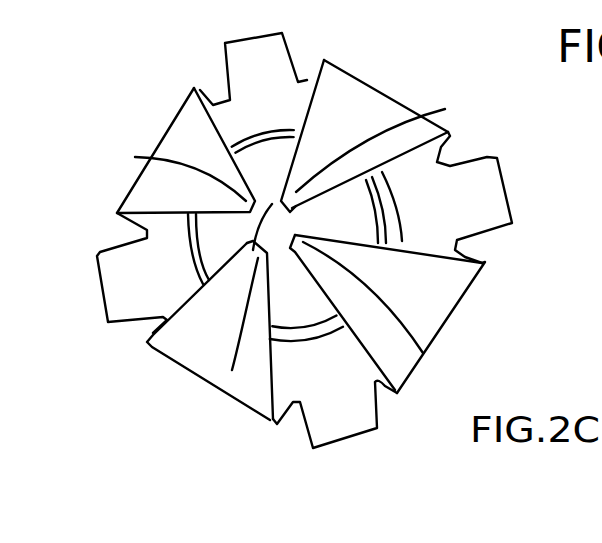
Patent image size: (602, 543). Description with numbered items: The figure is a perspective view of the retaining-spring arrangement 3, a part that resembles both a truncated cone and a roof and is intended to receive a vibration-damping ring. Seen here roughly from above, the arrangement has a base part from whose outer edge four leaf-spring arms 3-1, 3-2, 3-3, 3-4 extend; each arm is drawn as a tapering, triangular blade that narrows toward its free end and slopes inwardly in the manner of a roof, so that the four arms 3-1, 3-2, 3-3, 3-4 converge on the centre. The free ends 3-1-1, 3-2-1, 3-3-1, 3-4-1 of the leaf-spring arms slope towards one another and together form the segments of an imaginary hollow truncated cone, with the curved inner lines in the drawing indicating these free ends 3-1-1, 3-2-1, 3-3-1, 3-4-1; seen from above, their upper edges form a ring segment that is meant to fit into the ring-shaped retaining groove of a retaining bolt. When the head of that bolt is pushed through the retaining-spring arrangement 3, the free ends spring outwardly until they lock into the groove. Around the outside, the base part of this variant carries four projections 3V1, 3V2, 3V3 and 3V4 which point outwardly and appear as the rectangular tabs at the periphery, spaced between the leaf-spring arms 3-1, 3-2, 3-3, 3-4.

The retaining-spring arrangement 3 is at (57, 202).
The leaf-spring arm 3-1 is at (192, 335).
The free end of leaf-spring arm 3-1-1 is at (232, 370).
The leaf-spring arm 3-2 is at (435, 305).
The free end of leaf-spring arm 3-2-1 is at (423, 353).
The leaf-spring arm 3-3 is at (364, 101).
The free end of leaf-spring arm 3-3-1 is at (445, 109).
The leaf-spring arm 3-4 is at (186, 150).
The free end of leaf-spring arm 3-4-1 is at (135, 157).
The projection 3V1 is at (337, 430).
The projection 3V2 is at (490, 197).
The projection 3V3 is at (252, 47).
The projection 3V4 is at (115, 282).